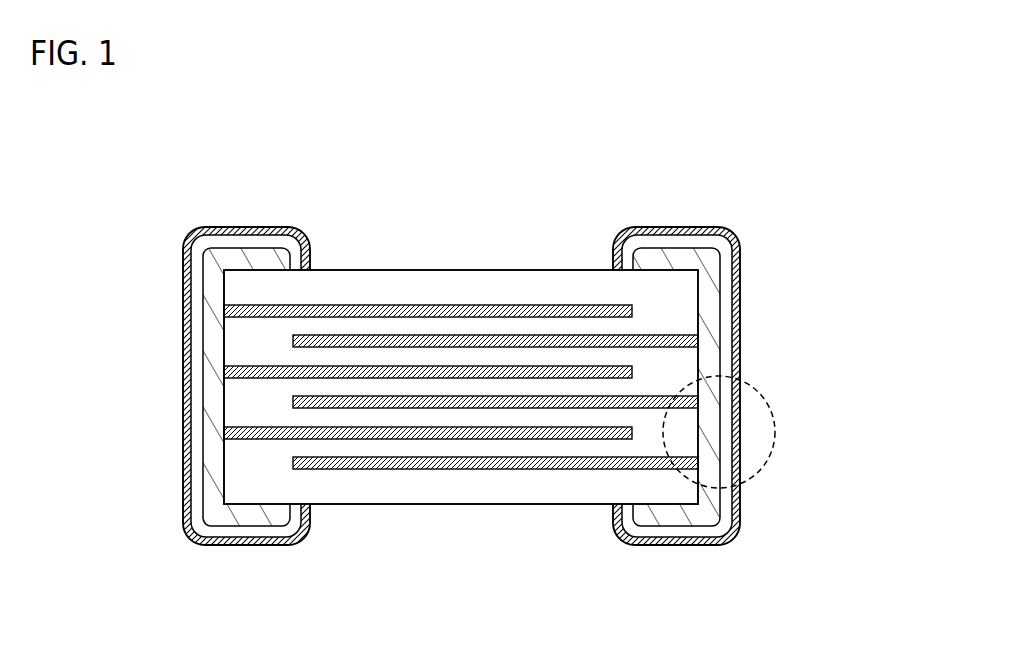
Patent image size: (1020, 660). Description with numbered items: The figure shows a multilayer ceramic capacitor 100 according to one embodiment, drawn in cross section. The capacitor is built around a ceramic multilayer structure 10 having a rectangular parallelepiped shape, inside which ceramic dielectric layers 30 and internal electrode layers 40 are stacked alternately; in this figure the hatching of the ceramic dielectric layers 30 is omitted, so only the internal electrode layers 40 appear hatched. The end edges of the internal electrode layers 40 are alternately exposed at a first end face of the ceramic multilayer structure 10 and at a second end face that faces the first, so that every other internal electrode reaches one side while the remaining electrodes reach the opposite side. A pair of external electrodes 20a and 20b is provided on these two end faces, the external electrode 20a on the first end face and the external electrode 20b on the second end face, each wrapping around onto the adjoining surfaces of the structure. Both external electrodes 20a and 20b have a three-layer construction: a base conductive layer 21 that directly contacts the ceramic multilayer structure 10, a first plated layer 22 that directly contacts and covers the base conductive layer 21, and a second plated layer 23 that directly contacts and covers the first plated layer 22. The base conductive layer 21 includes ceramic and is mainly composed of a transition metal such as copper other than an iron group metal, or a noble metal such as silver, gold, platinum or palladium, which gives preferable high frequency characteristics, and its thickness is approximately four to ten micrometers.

The multilayer ceramic capacitor 100 is at (782, 148).
The ceramic multilayer structure 10 is at (461, 345).
The external electrode 20a is at (835, 252).
The external electrode 20b is at (88, 252).
The base conductive layer 21 is at (227, 257).
The first plated layer 22 is at (195, 321).
The second plated layer 23 is at (187, 362).
The ceramic dielectric layer 30 is at (357, 322).
The internal electrode layer 40 is at (442, 348).